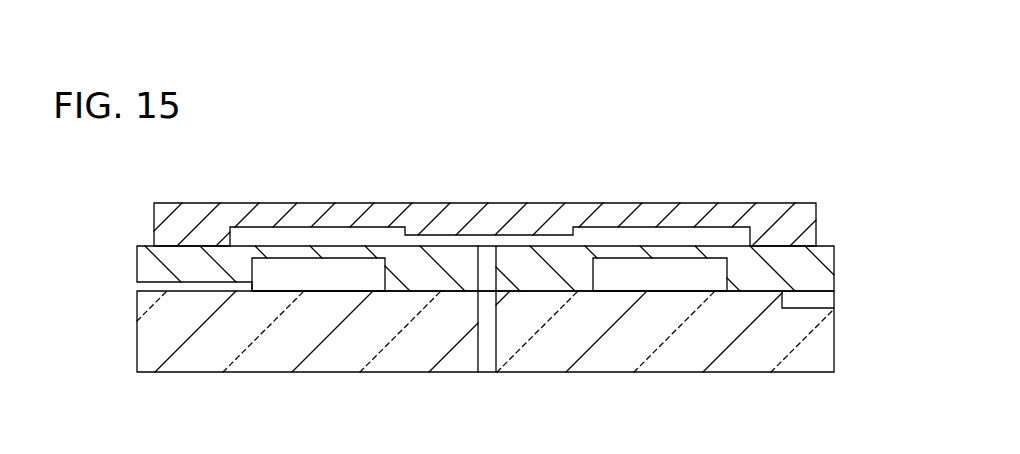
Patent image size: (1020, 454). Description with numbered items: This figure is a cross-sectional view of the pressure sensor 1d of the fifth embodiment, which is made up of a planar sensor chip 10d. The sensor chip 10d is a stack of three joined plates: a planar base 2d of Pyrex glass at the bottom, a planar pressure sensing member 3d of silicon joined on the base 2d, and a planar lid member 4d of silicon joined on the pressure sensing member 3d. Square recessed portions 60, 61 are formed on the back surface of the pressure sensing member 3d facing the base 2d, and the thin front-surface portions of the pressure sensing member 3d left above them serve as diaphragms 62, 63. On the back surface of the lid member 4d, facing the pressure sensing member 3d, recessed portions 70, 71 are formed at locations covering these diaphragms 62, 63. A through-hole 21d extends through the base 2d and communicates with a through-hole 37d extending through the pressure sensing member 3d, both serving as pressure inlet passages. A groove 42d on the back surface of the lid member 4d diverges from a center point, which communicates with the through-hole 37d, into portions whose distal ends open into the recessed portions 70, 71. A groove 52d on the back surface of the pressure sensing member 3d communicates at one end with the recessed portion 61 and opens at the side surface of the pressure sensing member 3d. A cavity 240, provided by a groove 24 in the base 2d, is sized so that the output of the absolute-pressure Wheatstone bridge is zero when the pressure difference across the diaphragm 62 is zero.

The pressure sensor 1d is at (463, 129).
The sensor chip 10d is at (122, 372).
The lid member 4d is at (807, 228).
The pressure sensing member 3d is at (822, 268).
The base 2d is at (823, 328).
The recessed portion 61 is at (293, 275).
The recessed portion 60 is at (642, 275).
The through-hole 21d is at (485, 362).
The through-hole 37d is at (490, 255).
The cavity 240 is at (782, 295).
The groove 24 is at (808, 315).
The groove 52d is at (200, 285).
The recessed portion 71 is at (295, 237).
The diaphragm 63 is at (340, 248).
The groove 42d is at (415, 243).
The recessed portion 70 is at (647, 237).
The diaphragm 62 is at (690, 250).